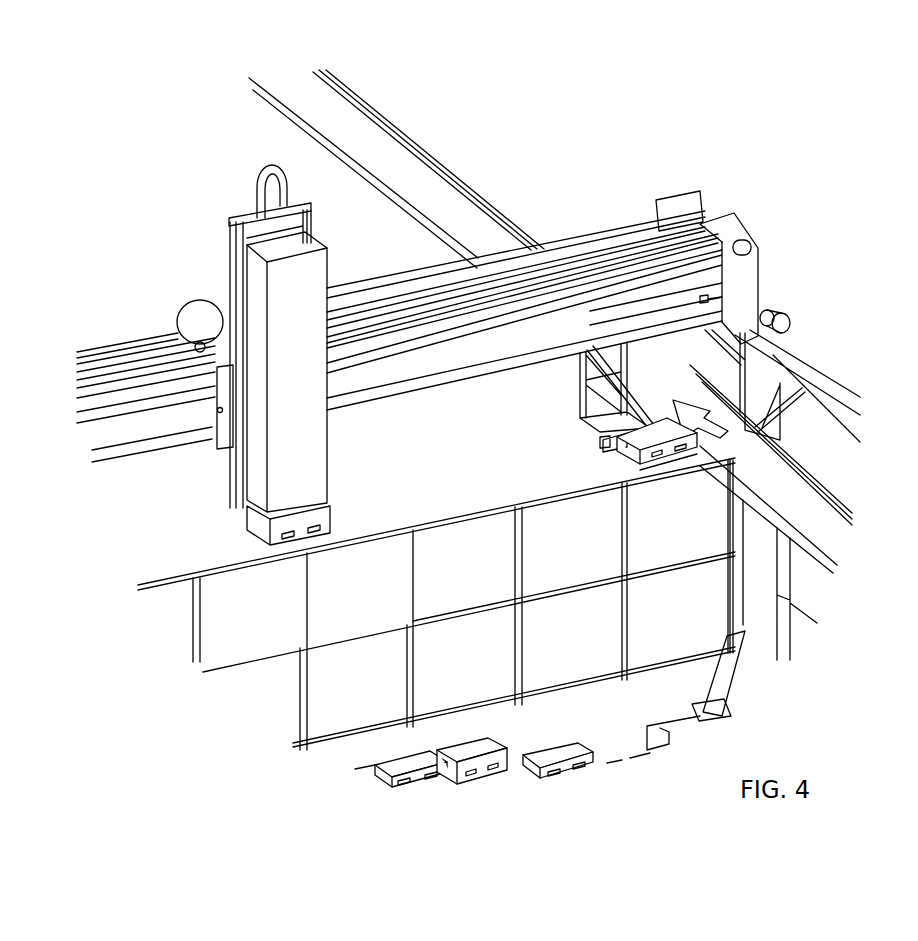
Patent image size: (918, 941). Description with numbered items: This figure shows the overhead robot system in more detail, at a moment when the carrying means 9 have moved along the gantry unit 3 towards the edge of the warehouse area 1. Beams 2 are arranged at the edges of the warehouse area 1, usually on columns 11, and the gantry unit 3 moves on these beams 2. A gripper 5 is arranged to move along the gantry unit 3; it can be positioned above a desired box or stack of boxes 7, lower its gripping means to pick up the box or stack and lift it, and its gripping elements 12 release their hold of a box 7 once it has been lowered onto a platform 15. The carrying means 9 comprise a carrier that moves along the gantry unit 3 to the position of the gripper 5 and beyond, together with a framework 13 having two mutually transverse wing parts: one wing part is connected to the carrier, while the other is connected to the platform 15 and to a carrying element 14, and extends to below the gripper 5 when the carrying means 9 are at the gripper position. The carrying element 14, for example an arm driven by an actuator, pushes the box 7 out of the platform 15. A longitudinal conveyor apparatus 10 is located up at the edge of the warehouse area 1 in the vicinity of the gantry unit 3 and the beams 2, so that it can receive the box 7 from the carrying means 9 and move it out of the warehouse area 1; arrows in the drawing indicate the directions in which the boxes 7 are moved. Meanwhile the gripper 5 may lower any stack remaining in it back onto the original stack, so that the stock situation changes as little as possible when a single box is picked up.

The warehouse area 1 is at (622, 734).
The beams 2 is at (815, 374).
The gantry unit 3 is at (147, 428).
The gripper 5 is at (322, 273).
The boxes 7 is at (330, 527).
The carrying means 9 is at (575, 389).
The longitudinal conveyor apparatus 10 is at (436, 190).
The columns 11 is at (767, 638).
The gripping elements 12 is at (257, 517).
The framework 13 is at (582, 416).
The carrying element 14 is at (613, 452).
The platform 15 is at (630, 457).